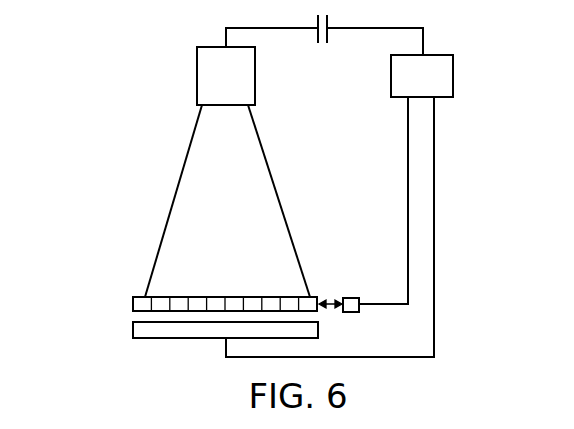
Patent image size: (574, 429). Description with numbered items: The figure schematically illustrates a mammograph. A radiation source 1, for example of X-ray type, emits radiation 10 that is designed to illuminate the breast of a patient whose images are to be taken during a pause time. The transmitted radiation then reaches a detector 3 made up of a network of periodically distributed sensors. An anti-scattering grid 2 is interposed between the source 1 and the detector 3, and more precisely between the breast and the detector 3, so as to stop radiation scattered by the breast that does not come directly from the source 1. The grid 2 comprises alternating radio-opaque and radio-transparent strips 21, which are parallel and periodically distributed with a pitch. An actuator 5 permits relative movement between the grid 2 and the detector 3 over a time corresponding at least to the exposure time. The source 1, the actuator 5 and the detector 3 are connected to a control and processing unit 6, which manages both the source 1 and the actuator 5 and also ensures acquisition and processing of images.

The radiation source 1 is at (219, 88).
The control and processing unit 6 is at (413, 89).
The radiation 10 is at (279, 199).
The anti-scattering grid 2 is at (186, 276).
The strips 21 is at (237, 303).
The detector 3 is at (128, 330).
The actuator 5 is at (352, 298).